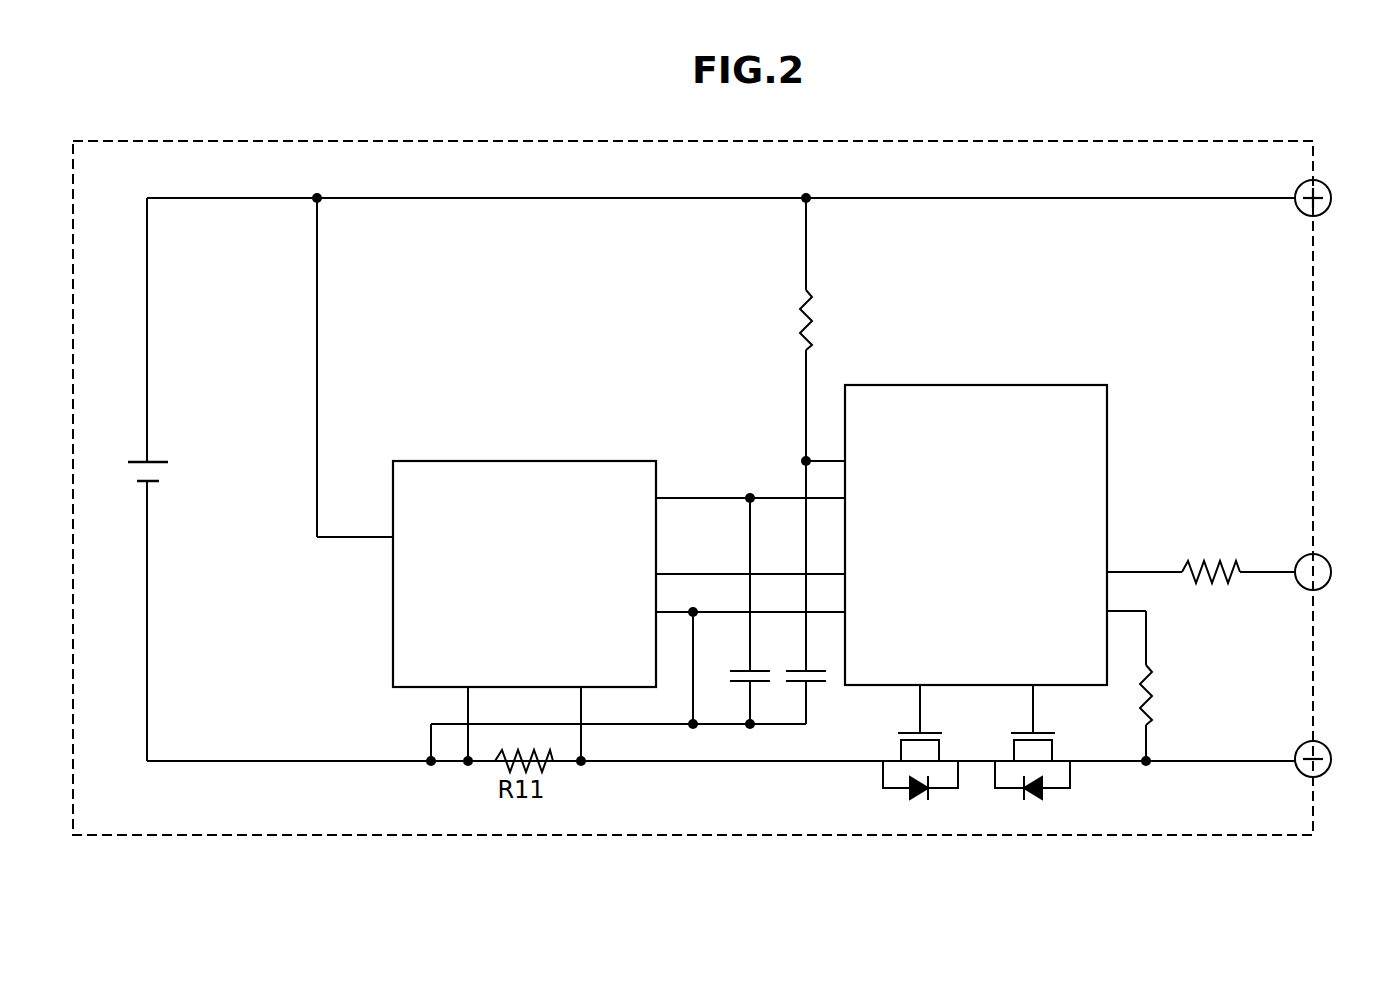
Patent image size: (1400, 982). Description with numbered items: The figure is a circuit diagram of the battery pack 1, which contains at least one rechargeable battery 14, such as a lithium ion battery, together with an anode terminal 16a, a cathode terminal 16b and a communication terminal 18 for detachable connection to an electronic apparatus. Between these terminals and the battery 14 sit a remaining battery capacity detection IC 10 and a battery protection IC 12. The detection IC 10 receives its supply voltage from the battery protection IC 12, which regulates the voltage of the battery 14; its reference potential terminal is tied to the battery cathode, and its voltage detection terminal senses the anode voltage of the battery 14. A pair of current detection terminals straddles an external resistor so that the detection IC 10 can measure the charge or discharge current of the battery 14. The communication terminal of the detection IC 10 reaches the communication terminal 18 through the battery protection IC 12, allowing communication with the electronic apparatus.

The battery pack 1 is at (1172, 141).
The remaining battery capacity detection IC 10 is at (572, 461).
The battery protection IC 12 is at (1058, 385).
The rechargeable battery 14 is at (160, 474).
The anode terminal 16a is at (1332, 197).
The cathode terminal 16b is at (1332, 758).
The communication terminal 18 is at (1332, 571).